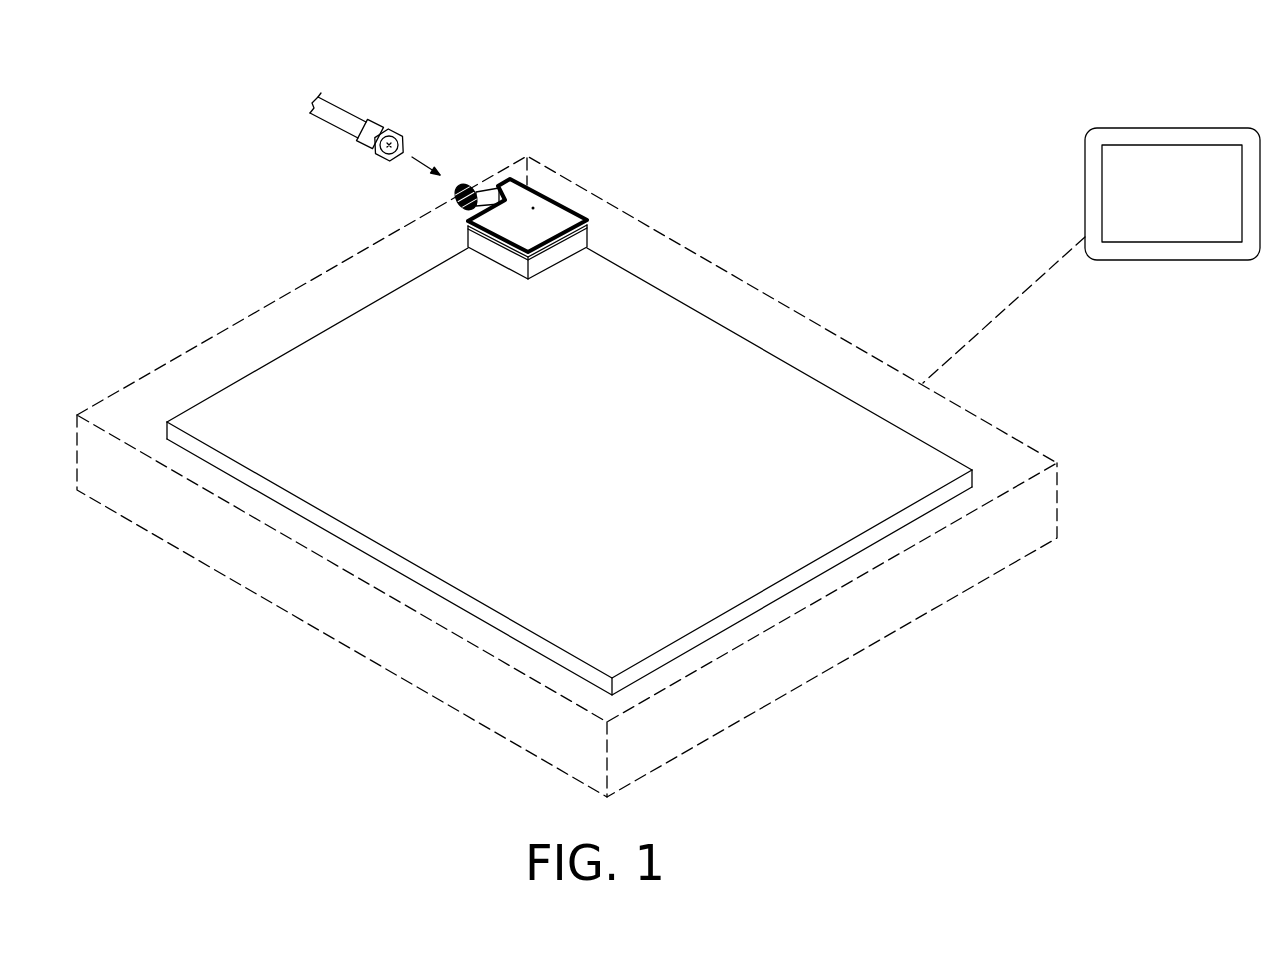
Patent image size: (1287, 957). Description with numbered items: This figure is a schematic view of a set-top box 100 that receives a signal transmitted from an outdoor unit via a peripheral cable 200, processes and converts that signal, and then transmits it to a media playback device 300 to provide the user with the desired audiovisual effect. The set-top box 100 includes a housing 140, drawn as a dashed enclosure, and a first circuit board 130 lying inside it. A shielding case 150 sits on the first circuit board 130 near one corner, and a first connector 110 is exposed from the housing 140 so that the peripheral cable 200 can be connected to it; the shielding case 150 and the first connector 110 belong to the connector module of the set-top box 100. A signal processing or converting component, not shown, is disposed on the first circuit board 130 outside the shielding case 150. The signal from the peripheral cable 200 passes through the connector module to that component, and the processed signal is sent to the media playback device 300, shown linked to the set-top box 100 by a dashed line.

The set-top box 100 is at (867, 252).
The first connector 110 is at (462, 184).
The first circuit board 130 is at (807, 397).
The housing 140 is at (763, 708).
The shielding case 150 is at (562, 203).
The peripheral cable 200 is at (398, 107).
The media playback device 300 is at (1185, 128).